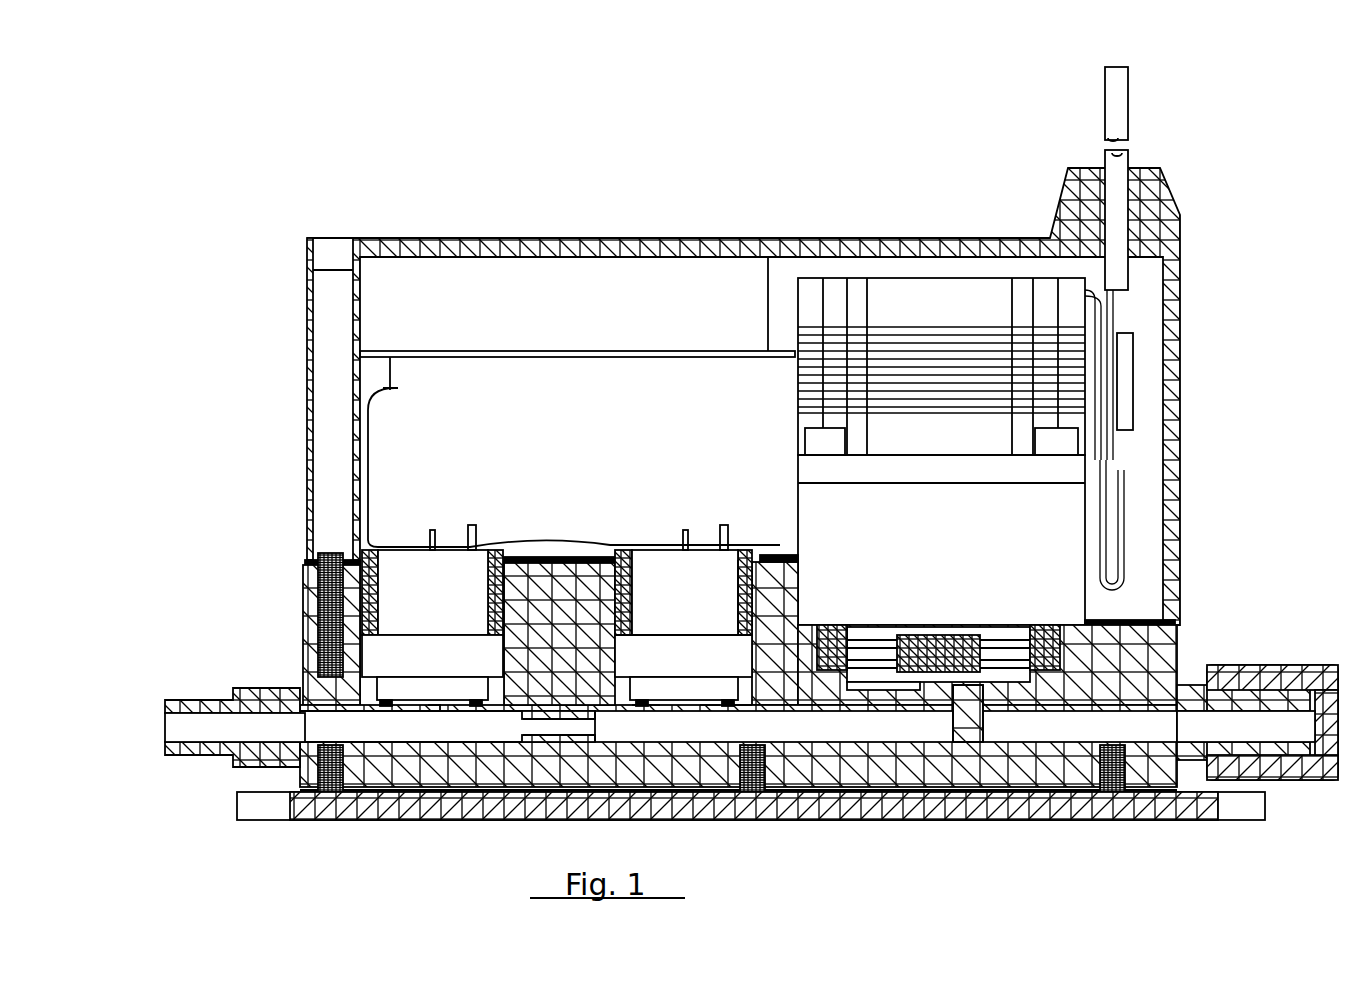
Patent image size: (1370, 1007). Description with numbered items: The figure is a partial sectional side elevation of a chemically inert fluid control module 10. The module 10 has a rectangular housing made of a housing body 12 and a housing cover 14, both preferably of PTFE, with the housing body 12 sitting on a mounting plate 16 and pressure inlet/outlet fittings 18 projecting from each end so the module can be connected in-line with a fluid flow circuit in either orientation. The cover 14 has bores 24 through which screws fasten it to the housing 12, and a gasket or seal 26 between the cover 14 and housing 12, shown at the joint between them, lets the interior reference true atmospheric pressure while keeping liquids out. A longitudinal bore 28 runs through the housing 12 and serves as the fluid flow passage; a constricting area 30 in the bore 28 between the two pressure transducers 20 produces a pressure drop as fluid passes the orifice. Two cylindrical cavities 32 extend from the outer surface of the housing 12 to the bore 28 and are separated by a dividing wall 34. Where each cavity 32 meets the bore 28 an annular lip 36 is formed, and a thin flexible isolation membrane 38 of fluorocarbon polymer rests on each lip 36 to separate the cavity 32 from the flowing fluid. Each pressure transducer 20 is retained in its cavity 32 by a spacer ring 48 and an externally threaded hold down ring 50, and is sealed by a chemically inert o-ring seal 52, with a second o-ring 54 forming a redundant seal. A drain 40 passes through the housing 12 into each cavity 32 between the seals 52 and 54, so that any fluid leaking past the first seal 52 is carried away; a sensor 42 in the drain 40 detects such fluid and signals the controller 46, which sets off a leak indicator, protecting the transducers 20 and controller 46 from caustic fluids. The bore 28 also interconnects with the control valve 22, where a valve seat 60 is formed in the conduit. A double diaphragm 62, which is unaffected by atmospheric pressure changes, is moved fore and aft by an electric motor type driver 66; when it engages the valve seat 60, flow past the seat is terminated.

The fluid control module 10 is at (648, 172).
The housing body 12 is at (1178, 640).
The housing cover 14 is at (1182, 462).
The mounting plate 16 is at (1195, 822).
The pressure inlet/outlet fittings 18 is at (253, 685).
The pressure transducers 20 is at (440, 685).
The control valve 22 is at (950, 553).
The bores 24 is at (325, 372).
The seal 26 is at (538, 558).
The longitudinal bore 28 is at (395, 712).
The constricting area 30 is at (522, 727).
The cylindrical cavities 32 is at (655, 705).
The dividing wall 34 is at (578, 590).
The annular lip 36 is at (470, 705).
The isolation membrane 38 is at (432, 705).
The drain 40 is at (607, 703).
The sensor 42 is at (590, 705).
The controller 46 is at (560, 351).
The spacer ring 48 is at (700, 672).
The hold down ring 50 is at (735, 583).
The o-ring seal 52 is at (745, 703).
The o-ring 54 is at (706, 702).
The valve seat 60 is at (935, 795).
The double diaphragm 62 is at (950, 640).
The driver 66 is at (920, 300).